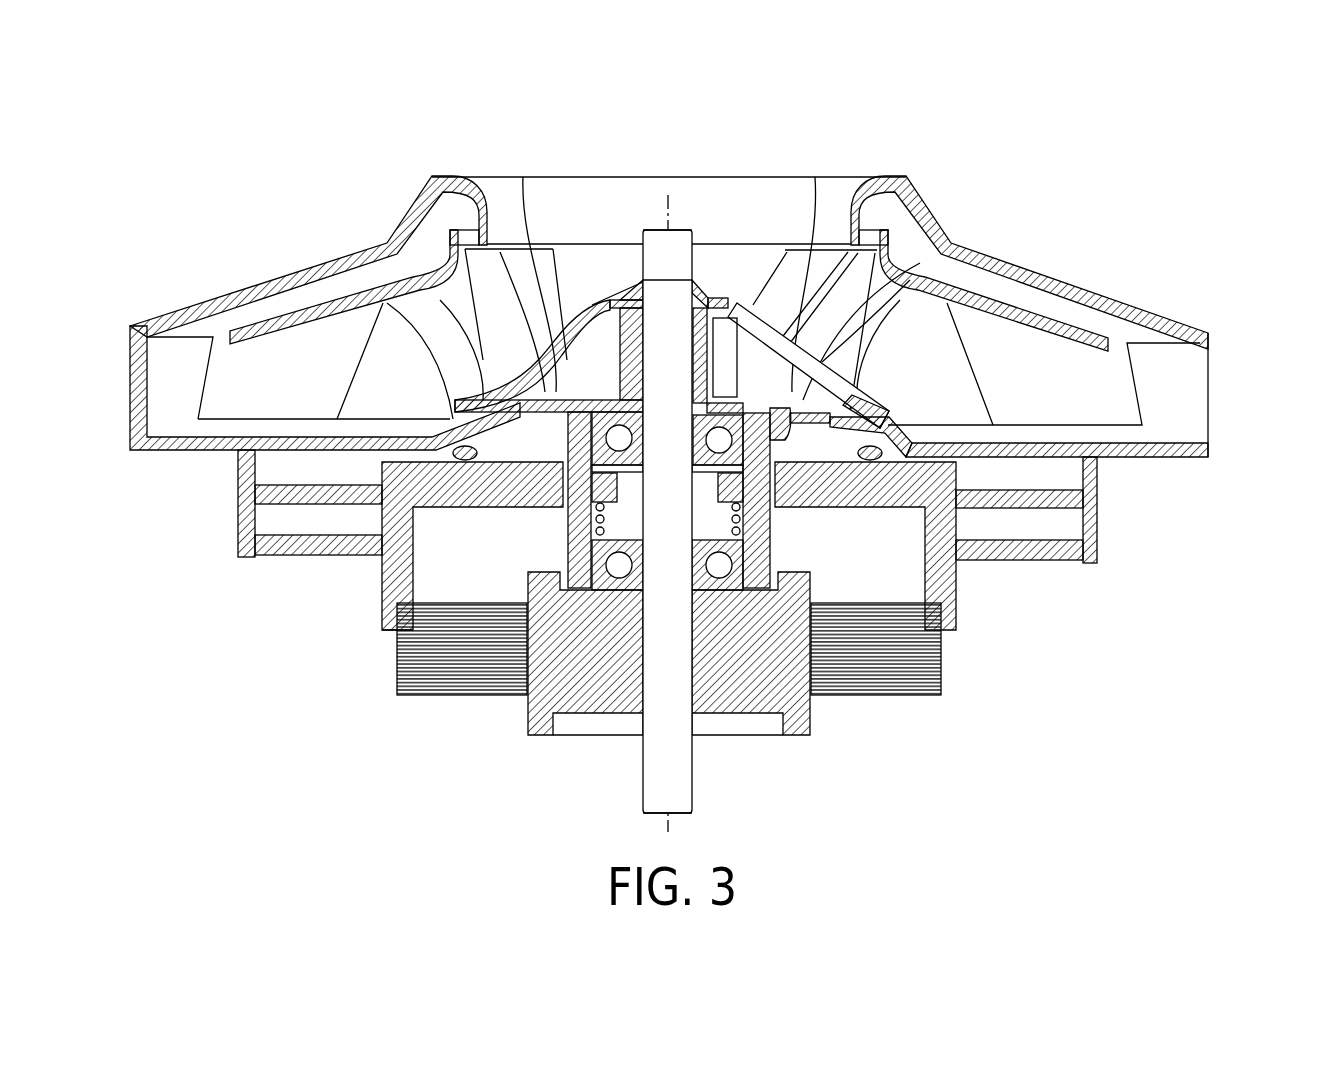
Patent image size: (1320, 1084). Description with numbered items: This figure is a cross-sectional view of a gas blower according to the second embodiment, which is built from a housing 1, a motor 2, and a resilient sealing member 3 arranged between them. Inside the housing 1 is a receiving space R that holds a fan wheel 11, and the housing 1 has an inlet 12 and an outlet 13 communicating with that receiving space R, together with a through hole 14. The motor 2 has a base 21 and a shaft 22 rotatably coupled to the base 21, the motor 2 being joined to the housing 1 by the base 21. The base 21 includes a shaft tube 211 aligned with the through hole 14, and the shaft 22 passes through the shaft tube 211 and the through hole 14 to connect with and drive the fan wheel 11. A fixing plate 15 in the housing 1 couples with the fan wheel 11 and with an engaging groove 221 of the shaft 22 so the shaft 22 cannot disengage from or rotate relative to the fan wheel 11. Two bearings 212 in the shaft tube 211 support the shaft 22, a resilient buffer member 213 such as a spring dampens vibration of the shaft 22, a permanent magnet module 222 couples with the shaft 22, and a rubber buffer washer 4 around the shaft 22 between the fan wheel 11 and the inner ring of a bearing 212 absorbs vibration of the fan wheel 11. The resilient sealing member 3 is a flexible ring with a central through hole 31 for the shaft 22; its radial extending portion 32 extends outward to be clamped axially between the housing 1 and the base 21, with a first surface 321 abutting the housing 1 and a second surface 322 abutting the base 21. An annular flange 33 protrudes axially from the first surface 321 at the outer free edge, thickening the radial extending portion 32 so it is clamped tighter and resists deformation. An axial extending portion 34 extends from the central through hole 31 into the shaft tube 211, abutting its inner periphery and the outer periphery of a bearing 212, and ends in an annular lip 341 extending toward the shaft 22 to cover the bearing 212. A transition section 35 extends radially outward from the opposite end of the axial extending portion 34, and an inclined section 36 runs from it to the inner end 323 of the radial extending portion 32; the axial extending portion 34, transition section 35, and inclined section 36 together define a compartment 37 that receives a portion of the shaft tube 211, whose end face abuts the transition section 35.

The housing 1 is at (1176, 330).
The fan wheel 11 is at (1026, 310).
The inlet 12 is at (828, 172).
The outlet 13 is at (1210, 396).
The through hole 14 is at (893, 290).
The fixing plate 15 is at (637, 244).
The receiving space R is at (905, 218).
The motor 2 is at (852, 738).
The base 21 is at (882, 498).
The shaft tube 211 is at (822, 470).
The bearing 212 is at (745, 595).
The buffer member 213 is at (585, 600).
The shaft 22 is at (684, 790).
The engaging groove 221 is at (660, 228).
The permanent magnet module 222 is at (617, 716).
The resilient sealing member 3 is at (527, 412).
The central through hole 31 is at (736, 392).
The radial extending portion 32 is at (518, 440).
The first surface 321 is at (474, 243).
The second surface 322 is at (484, 440).
The inner end 323 is at (560, 440).
The annular flange 33 is at (374, 294).
The axial extending portion 34 is at (620, 302).
The annular lip 341 is at (514, 702).
The transition section 35 is at (560, 402).
The inclined section 36 is at (490, 446).
The compartment 37 is at (797, 408).
The buffer washer 4 is at (703, 298).